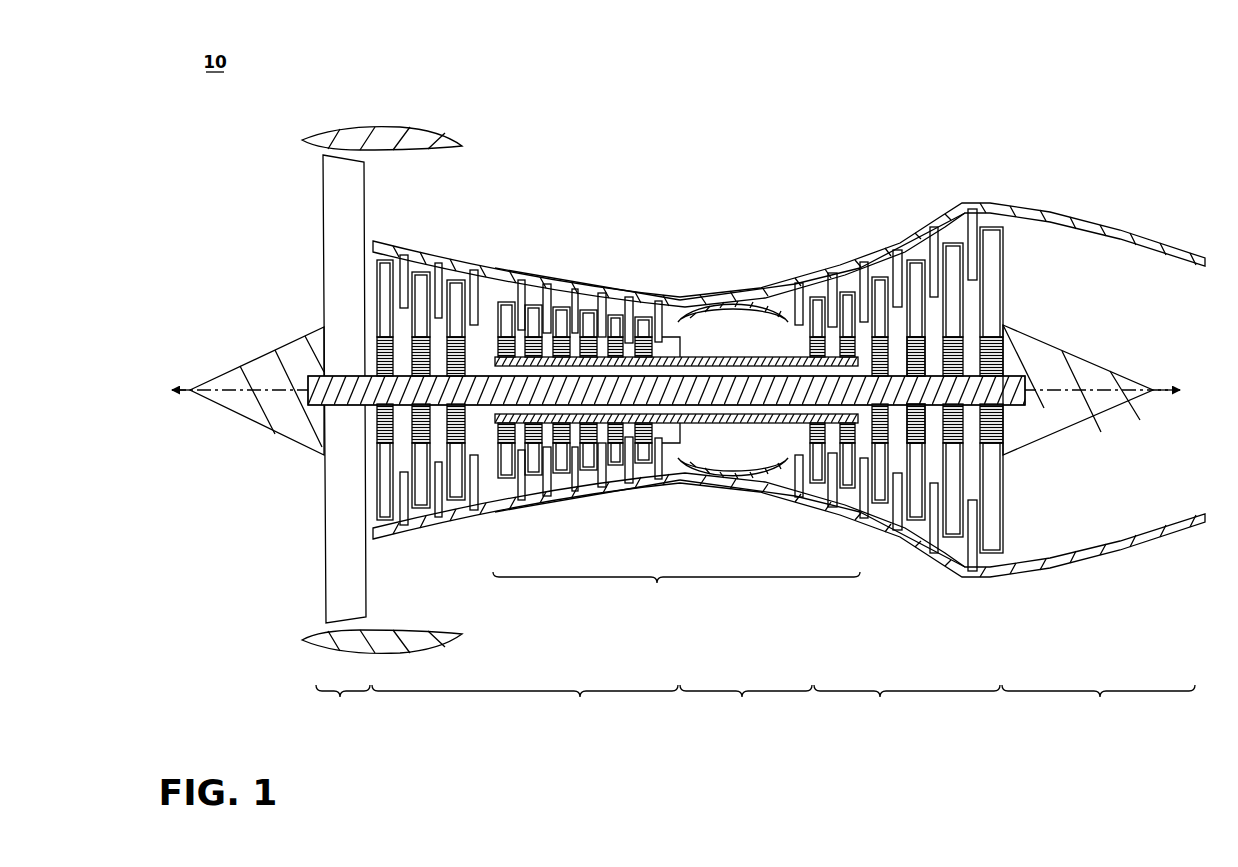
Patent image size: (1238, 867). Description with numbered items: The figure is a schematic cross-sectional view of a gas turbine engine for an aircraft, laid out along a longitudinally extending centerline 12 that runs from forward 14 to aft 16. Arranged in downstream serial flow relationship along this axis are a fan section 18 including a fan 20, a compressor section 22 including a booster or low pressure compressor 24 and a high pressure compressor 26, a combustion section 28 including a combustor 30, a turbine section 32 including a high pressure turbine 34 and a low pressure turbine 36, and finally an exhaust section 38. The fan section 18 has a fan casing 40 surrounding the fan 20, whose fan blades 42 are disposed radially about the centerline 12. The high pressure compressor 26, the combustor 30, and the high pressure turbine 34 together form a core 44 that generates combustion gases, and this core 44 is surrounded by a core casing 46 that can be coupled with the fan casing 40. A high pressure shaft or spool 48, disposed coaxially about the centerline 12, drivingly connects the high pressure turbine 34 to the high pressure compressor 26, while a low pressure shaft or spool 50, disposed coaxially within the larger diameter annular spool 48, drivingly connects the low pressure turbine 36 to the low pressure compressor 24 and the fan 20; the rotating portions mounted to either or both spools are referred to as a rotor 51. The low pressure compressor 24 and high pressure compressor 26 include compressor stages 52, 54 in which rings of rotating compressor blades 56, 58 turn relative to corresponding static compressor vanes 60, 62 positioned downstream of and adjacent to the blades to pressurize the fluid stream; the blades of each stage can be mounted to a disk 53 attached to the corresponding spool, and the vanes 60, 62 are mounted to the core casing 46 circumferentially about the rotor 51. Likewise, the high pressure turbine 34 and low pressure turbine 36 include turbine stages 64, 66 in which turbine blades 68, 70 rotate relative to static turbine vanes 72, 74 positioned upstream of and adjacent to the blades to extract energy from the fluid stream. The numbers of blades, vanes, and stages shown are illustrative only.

The centerline 12 is at (238, 386).
The forward 14 is at (162, 390).
The aft 16 is at (1188, 390).
The fan section 18 is at (320, 399).
The fan 20 is at (316, 206).
The compressor section 22 is at (788, 444).
The low pressure compressor 24 is at (490, 518).
The high pressure compressor 26 is at (625, 494).
The combustion section 28 is at (745, 468).
The combustor 30 is at (781, 302).
The turbine section 32 is at (936, 421).
The high pressure turbine 34 is at (796, 516).
The low pressure turbine 36 is at (906, 555).
The exhaust section 38 is at (1098, 525).
The fan casing 40 is at (386, 127).
The fan blades 42 is at (333, 575).
The core 44 is at (676, 591).
The core casing 46 is at (718, 292).
The HP shaft or spool 48 is at (676, 352).
The LP shaft or spool 50 is at (483, 375).
The rotor 51 is at (606, 360).
The compressor stage 52 is at (376, 232).
The disk 53 is at (912, 350).
The compressor stage 54 is at (507, 263).
The compressor blades 56 is at (389, 267).
The compressor blades 58 is at (517, 307).
The static compressor vanes 60 is at (408, 299).
The static compressor vanes 62 is at (529, 332).
The turbine stage 64 is at (820, 258).
The turbine stage 66 is at (928, 210).
The turbine blades 68 is at (849, 304).
The turbine blades 70 is at (952, 258).
The static turbine vanes 72 is at (834, 289).
The static turbine vanes 74 is at (937, 244).